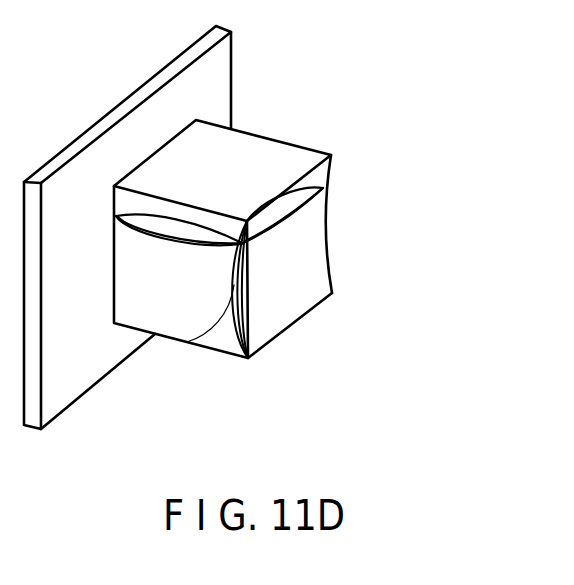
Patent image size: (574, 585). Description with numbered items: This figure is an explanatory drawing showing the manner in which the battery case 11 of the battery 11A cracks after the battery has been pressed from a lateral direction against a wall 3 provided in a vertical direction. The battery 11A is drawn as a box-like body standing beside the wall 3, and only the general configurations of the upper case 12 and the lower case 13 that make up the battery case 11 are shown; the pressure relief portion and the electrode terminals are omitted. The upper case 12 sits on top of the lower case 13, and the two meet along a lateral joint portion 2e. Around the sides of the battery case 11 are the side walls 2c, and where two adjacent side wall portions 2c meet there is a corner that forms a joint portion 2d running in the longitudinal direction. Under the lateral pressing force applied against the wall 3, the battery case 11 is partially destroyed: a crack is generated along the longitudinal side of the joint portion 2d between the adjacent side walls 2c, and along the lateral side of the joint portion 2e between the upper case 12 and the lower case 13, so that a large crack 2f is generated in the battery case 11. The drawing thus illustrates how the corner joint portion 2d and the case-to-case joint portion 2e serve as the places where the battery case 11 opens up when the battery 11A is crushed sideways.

The wall 3 is at (221, 75).
The battery 11A is at (351, 122).
The battery case 11 is at (412, 158).
The upper case 12 is at (318, 172).
The lower case 13 is at (318, 220).
The side wall 2c is at (302, 299).
The joint portion 2d is at (247, 332).
The joint portion 2e is at (142, 228).
The large crack 2f is at (300, 205).